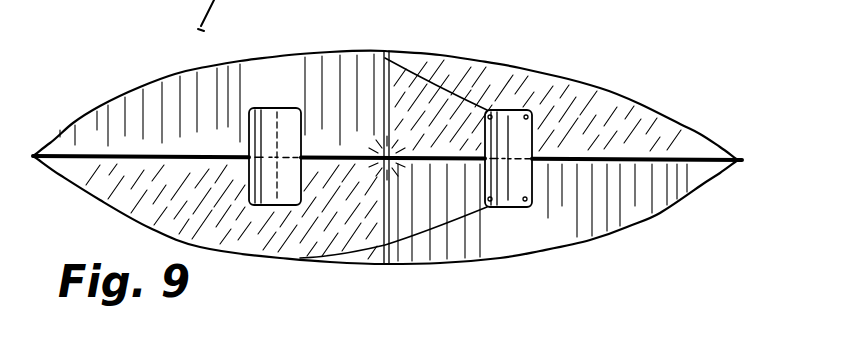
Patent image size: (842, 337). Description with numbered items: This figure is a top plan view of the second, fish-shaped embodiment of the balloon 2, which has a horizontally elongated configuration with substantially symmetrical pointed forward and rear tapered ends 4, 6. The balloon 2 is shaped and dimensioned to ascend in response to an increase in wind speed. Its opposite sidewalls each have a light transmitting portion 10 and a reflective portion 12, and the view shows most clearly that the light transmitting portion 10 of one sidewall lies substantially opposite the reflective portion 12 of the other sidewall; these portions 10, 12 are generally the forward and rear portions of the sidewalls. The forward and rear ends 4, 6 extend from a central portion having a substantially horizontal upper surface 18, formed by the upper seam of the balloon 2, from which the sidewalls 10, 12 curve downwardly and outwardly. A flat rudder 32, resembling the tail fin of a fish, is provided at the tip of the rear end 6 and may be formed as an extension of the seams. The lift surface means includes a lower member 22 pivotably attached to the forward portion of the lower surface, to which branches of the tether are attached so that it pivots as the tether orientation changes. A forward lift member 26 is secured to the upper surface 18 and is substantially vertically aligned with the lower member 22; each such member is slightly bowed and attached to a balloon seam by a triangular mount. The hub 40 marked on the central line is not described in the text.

The balloon 2 is at (530, 60).
The forward tapered end 4 is at (78, 187).
The rear tapered end 6 is at (627, 227).
The light transmitting portion 10 is at (227, 197).
The reflective portion 12 is at (192, 102).
The upper surface 18 is at (430, 154).
The lower member 22 is at (535, 130).
The forward lift member 26 is at (288, 122).
The rudder 32 is at (713, 159).
The mast hub with pivot 40 is at (383, 163).